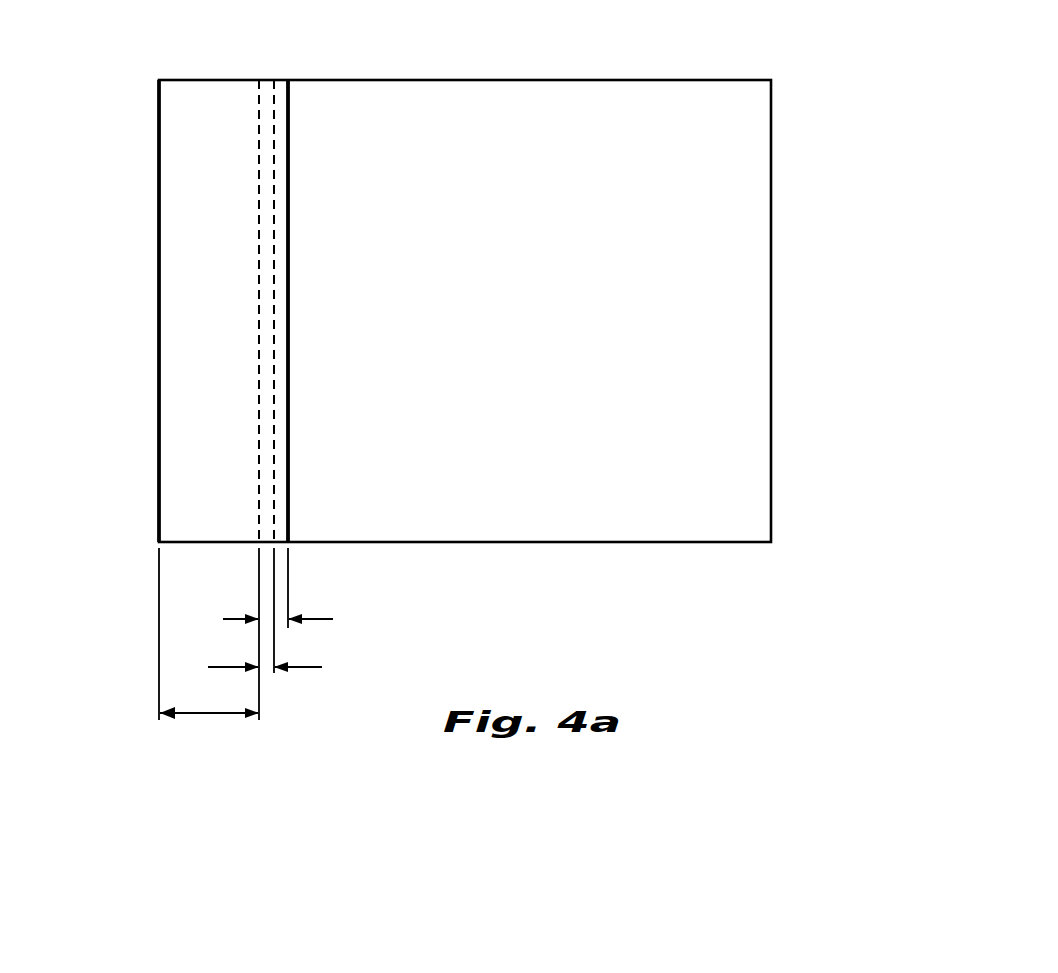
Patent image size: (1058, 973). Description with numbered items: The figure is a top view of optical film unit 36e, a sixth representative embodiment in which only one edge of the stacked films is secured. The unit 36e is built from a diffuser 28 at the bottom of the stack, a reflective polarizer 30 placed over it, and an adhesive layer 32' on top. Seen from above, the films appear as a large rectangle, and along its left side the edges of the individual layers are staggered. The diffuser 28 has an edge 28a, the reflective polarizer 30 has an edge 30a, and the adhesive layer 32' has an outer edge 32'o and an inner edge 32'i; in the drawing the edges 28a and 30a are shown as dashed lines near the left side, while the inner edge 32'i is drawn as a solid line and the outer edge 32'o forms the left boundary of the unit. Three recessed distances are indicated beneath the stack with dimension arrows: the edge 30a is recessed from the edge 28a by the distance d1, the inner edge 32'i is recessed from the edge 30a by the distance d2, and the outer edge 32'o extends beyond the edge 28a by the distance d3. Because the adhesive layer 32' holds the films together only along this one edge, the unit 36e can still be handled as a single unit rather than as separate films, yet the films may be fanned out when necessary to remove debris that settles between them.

The optical film unit 36e is at (790, 60).
The adhesive layer 32' is at (129, 311).
The outer edge of adhesive layer 32'o is at (111, 311).
The inner edge of adhesive layer 32'i is at (333, 311).
The diffuser 28 is at (272, 308).
The reflective polarizer 30 is at (283, 350).
The edge of diffuser 28a is at (258, 407).
The edge of reflective polarizer 30a is at (272, 443).
The recessed distance d1 is at (310, 670).
The recessed distance d2 is at (328, 623).
The recessed distance d3 is at (208, 717).